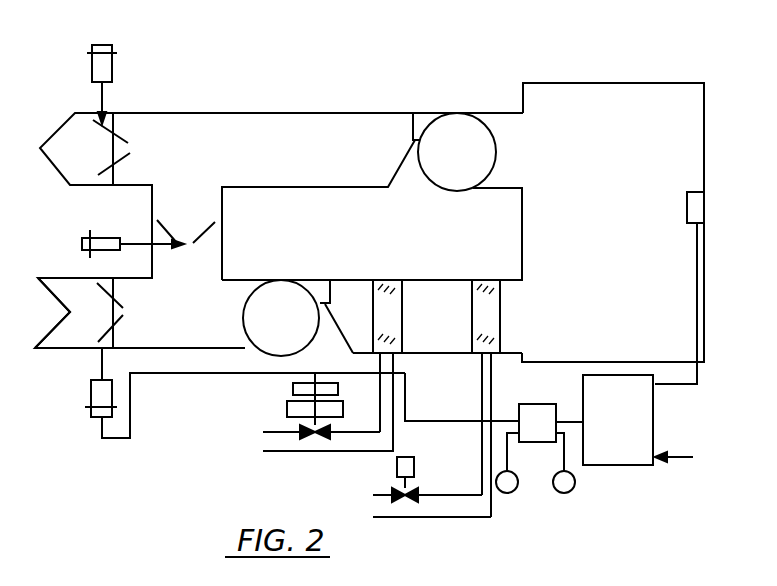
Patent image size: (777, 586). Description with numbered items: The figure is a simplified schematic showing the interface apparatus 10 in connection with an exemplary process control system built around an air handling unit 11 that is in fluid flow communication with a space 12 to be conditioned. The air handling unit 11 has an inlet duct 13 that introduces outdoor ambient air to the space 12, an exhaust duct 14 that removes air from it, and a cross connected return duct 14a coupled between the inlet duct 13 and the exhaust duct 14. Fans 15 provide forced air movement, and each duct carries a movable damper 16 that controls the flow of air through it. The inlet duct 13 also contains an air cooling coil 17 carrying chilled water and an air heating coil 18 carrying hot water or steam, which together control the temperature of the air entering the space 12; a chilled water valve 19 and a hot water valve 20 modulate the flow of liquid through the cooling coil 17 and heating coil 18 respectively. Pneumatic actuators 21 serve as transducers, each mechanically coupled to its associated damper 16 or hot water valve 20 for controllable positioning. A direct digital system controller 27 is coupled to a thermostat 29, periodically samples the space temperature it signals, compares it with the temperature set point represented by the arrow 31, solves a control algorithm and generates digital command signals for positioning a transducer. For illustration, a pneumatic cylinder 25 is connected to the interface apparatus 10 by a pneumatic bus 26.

The interface apparatus 10 is at (537, 403).
The air handling unit 11 is at (316, 234).
The space 12 is at (618, 231).
The inlet duct 13 is at (180, 319).
The exhaust duct 14 is at (185, 159).
The return duct 14a is at (208, 212).
The fan 15 is at (467, 157).
The damper 16 is at (102, 147).
The air cooling coil 17 is at (403, 317).
The air heating coil 18 is at (502, 318).
The chilled water valve 19 is at (337, 427).
The hot water valve 20 is at (418, 483).
The pneumatic actuator 21 is at (115, 78).
The pneumatic cylinder 25 is at (90, 390).
The pneumatic bus 26 is at (198, 374).
The direct digital system controller 27 is at (632, 417).
The thermostat 29 is at (687, 195).
The arrow 31 is at (667, 455).